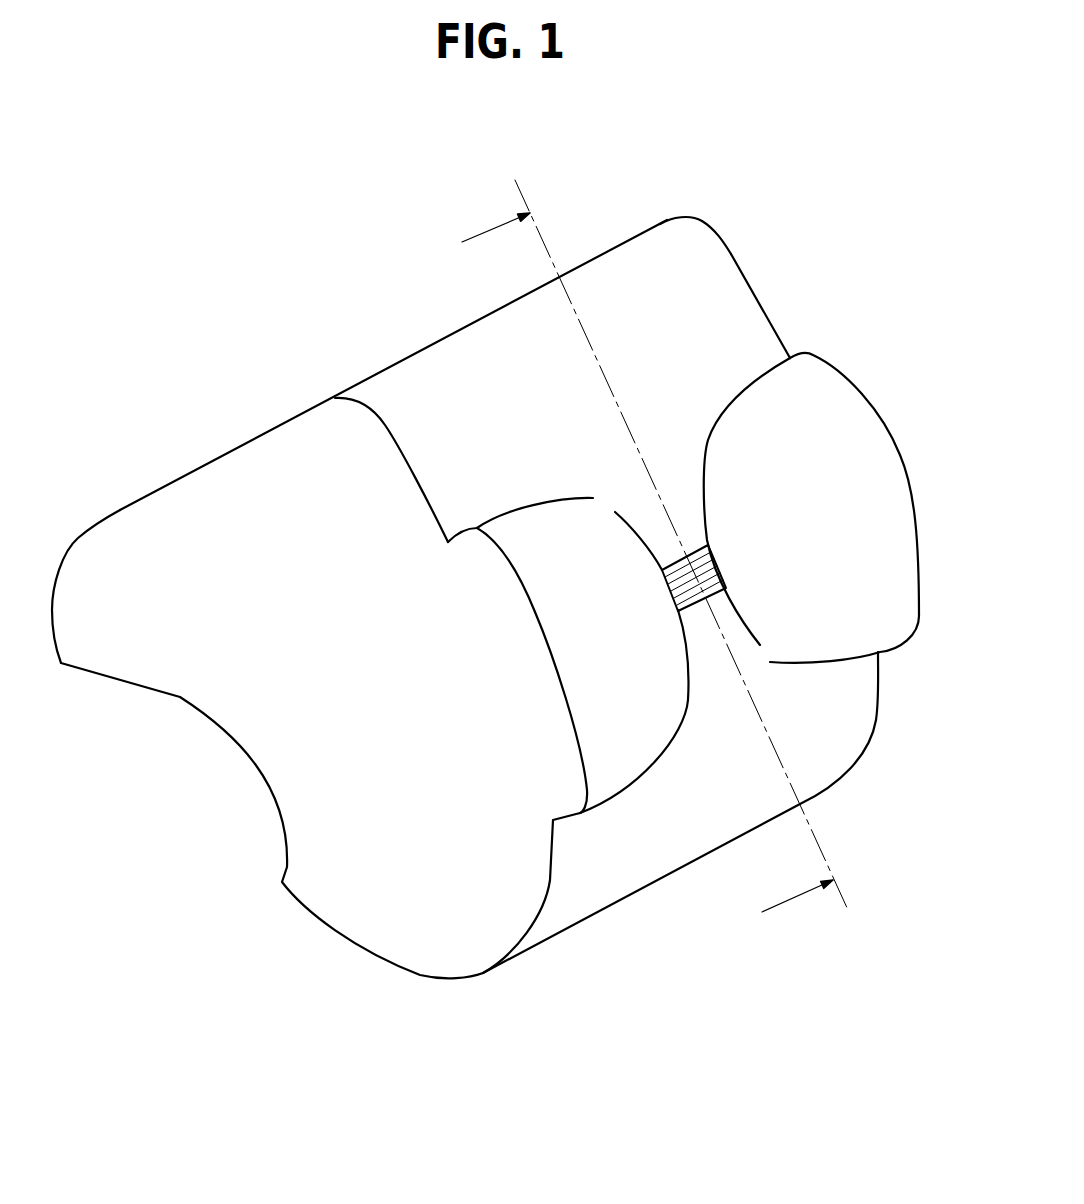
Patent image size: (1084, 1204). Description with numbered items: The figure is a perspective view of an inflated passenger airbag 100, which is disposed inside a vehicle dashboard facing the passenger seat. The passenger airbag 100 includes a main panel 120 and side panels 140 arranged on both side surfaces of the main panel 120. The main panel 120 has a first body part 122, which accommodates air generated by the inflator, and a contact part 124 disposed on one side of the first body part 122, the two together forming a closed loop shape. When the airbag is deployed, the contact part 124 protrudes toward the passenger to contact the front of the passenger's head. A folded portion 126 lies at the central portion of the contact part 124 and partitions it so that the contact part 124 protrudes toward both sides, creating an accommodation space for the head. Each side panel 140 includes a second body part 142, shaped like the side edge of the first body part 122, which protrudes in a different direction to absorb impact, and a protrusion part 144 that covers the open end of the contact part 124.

The passenger airbag 100 is at (106, 226).
The main panel 120 is at (729, 230).
The first body part 122 is at (730, 292).
The contact part 124 is at (889, 422).
The folded portion 126 is at (674, 643).
The side panel 140 is at (251, 770).
The second body part 142 is at (185, 483).
The protrusion part 144 is at (528, 692).